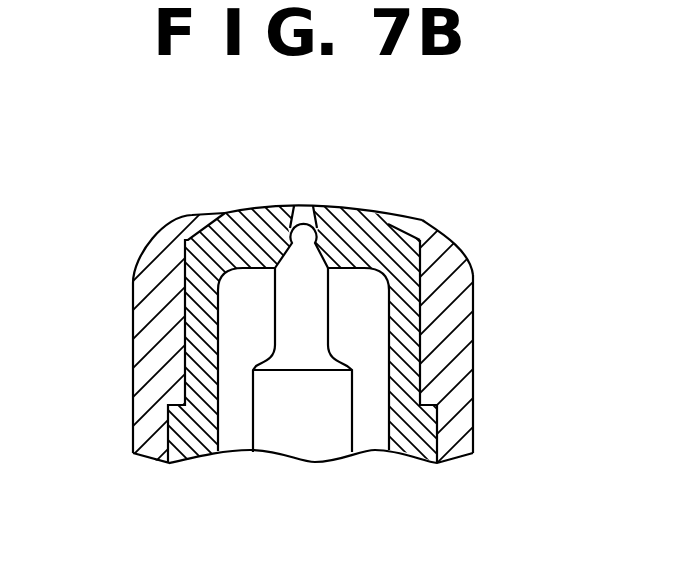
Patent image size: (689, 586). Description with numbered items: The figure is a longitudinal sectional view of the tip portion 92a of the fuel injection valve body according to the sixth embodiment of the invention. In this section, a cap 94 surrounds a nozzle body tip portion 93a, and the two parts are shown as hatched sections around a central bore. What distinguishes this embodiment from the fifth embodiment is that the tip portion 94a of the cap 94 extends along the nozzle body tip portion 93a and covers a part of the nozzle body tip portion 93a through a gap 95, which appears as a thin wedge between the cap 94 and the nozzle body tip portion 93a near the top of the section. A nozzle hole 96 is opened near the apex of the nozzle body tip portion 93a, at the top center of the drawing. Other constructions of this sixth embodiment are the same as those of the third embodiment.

The tip portion of the fuel injection valve body 92a is at (156, 209).
The nozzle body tip portion 93a is at (285, 207).
The cap 94 is at (455, 452).
The tip portion of the cap 94a is at (423, 220).
The gap 95 is at (392, 218).
The nozzle hole 96 is at (312, 207).